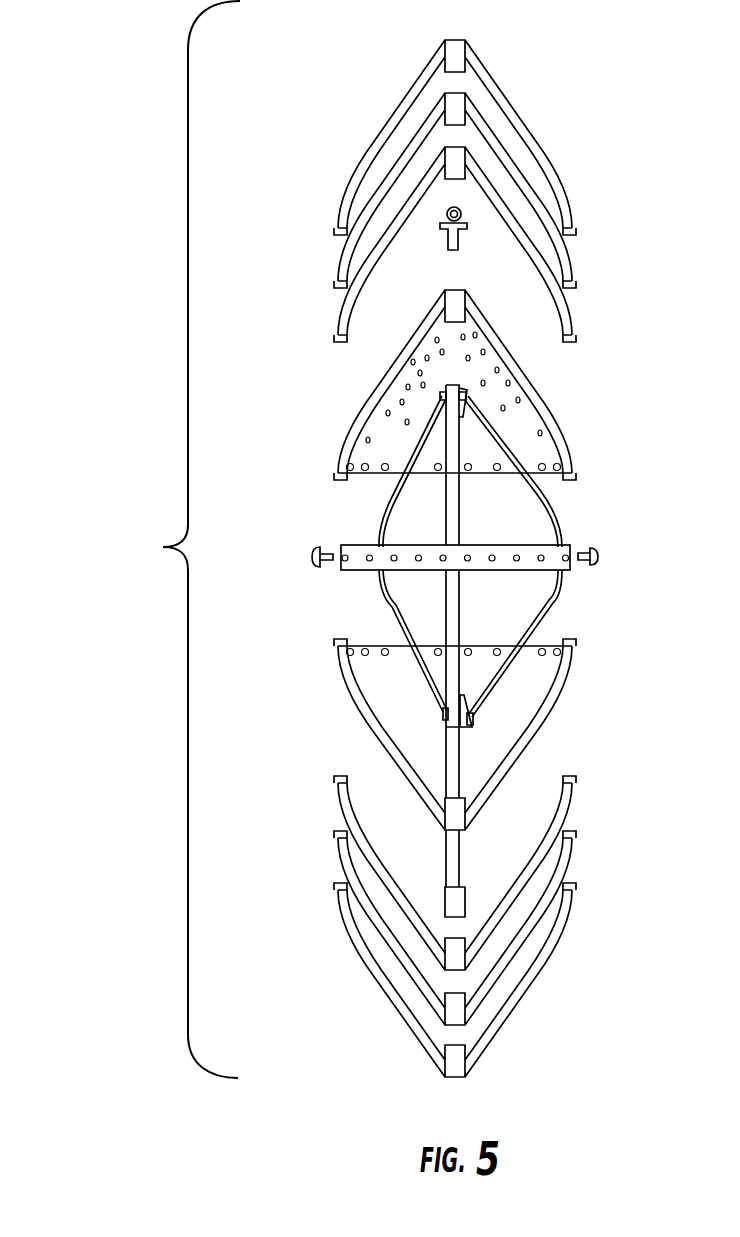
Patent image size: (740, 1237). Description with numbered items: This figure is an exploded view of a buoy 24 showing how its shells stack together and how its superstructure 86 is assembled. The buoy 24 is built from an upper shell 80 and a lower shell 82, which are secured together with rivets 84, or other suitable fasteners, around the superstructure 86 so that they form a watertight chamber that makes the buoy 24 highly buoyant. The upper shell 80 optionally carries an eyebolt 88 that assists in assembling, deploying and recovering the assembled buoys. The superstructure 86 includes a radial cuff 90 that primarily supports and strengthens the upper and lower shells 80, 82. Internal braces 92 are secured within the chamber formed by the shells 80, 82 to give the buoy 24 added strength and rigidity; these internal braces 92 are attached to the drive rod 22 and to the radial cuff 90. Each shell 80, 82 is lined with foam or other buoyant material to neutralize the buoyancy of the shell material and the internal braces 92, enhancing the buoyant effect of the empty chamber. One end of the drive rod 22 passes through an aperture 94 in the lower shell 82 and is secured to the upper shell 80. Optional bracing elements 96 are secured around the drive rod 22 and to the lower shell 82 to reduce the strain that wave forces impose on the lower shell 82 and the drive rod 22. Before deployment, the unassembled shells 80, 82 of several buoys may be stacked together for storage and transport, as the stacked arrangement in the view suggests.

The buoy 24 is at (152, 492).
The drive rod 22 is at (460, 523).
The upper shell 80 is at (555, 412).
The lower shell 82 is at (566, 688).
The rivets 84 is at (312, 558).
The superstructure 86 is at (445, 554).
The eyebolt 88 is at (440, 222).
The radial cuff 90 is at (358, 572).
The internal braces 92 is at (374, 531).
The aperture 94 is at (470, 828).
The bracing elements 96 is at (468, 736).